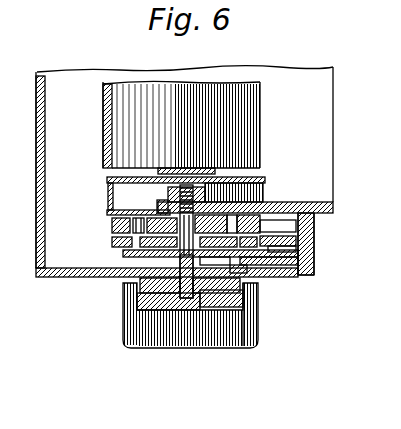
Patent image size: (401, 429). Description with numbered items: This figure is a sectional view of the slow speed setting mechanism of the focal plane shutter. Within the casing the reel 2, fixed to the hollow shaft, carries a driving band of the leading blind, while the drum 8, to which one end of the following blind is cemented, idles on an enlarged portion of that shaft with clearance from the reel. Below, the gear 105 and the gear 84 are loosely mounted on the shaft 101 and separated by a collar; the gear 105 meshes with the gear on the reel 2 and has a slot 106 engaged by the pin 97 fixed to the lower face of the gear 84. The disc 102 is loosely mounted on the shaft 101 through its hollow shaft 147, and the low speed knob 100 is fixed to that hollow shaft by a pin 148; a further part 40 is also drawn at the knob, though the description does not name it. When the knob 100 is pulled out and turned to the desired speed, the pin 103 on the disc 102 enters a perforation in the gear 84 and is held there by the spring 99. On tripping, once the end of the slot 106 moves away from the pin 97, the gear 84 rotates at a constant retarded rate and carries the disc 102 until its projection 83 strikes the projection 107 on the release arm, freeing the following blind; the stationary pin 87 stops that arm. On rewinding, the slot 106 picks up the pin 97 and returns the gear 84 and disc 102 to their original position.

The reel 2 is at (237, 228).
The drum 8 is at (262, 104).
The drum 40 is at (258, 333).
The projection 83 is at (313, 264).
The gear 84 is at (262, 239).
The stationary pin 87 is at (313, 276).
The pin 97 is at (112, 227).
The spring 99 is at (260, 277).
The low speed knob 100 is at (200, 337).
The shaft 101 is at (145, 287).
The disc 102 is at (135, 257).
The pin 103 is at (296, 250).
The gear 105 is at (262, 228).
The slot 106 is at (255, 207).
The projection 107 is at (245, 273).
The hollow shaft 147 is at (197, 307).
The pin 148 is at (243, 300).